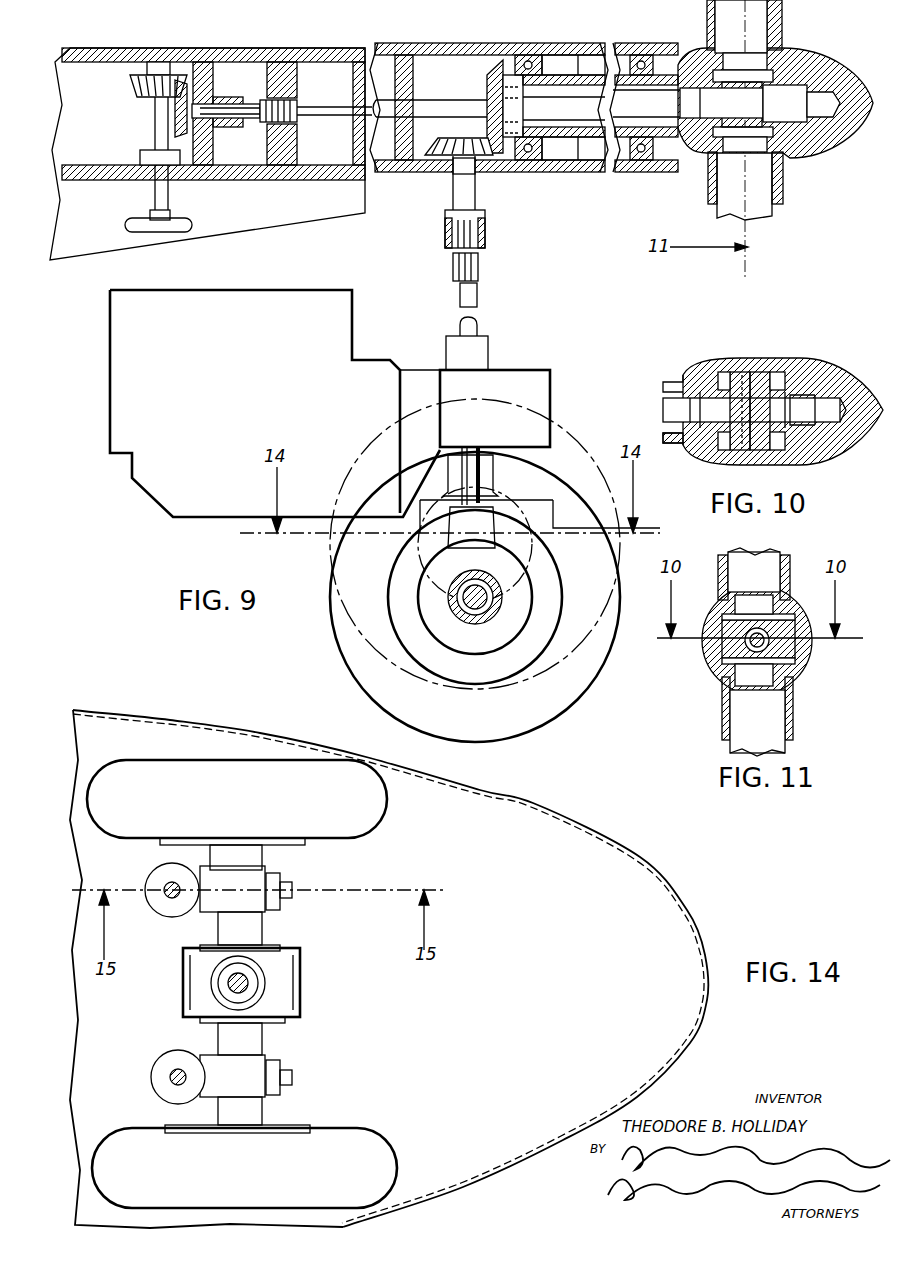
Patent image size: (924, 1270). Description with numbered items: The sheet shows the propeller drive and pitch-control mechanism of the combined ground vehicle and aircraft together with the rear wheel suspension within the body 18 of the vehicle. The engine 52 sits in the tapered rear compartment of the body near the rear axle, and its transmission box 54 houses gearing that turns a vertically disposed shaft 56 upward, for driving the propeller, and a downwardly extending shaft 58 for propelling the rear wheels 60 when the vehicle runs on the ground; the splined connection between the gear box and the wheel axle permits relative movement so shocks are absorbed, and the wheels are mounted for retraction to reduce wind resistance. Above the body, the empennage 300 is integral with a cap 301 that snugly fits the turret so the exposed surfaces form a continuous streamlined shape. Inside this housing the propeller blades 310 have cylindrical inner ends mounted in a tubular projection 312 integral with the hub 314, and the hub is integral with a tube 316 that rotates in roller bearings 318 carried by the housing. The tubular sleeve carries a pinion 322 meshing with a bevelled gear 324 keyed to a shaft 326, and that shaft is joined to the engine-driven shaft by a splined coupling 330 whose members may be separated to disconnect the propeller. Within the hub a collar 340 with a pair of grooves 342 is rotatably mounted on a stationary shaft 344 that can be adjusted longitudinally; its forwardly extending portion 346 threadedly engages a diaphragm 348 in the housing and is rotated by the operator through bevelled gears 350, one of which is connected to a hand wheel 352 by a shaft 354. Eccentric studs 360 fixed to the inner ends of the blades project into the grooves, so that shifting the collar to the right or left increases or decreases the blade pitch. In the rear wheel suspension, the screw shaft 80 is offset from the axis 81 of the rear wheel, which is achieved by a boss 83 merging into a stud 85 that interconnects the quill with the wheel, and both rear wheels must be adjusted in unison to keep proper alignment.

In FIG. 14, the hull 18 is at (535, 808).
In FIG. 9, the engine 52 is at (352, 310).
In FIG. 9, the transmission box 54 is at (512, 375).
In FIG. 9, the vertically disposed shaft 56 is at (460, 300).
In FIG. 9, the downwardly extending shaft 58 is at (484, 478).
In FIG. 14, the downwardly extending shaft 58 is at (228, 983).
In FIG. 9, the rear wheels 60 is at (605, 640).
In FIG. 14, the rear wheels 60 is at (380, 796).
In FIG. 14, the screw shaft 80 is at (160, 882).
In FIG. 9, the axis of the rear wheel 81 is at (486, 598).
In FIG. 14, the boss 83 is at (200, 912).
In FIG. 14, the stud 85 is at (292, 890).
In FIG. 9, the empennage 300 is at (432, 46).
In FIG. 9, the cap 301 is at (300, 210).
In FIG. 9, the propeller blades 310 is at (775, 208).
In FIG. 11, the propeller blades 310 is at (755, 560).
In FIG. 9, the tubular projection 312 is at (782, 22).
In FIG. 11, the tubular projection 312 is at (718, 565).
In FIG. 9, the hub 314 is at (805, 63).
In FIG. 10, the hub 314 is at (860, 395).
In FIG. 11, the hub 314 is at (810, 655).
In FIG. 9, the tube 316 is at (583, 80).
In FIG. 9, the roller bearings 318 is at (528, 56).
In FIG. 9, the pinion 322 is at (488, 80).
In FIG. 9, the bevelled gear 324 is at (470, 138).
In FIG. 9, the shaft 326 is at (476, 200).
In FIG. 9, the splined coupling 330 is at (480, 262).
In FIG. 9, the collar 340 is at (710, 60).
In FIG. 10, the collar 340 is at (760, 372).
In FIG. 10, the grooves 342 is at (742, 372).
In FIG. 11, the grooves 342 is at (756, 642).
In FIG. 9, the stationary shaft 344 is at (800, 115).
In FIG. 10, the stationary shaft 344 is at (757, 386).
In FIG. 9, the forwardly extending portion 346 is at (313, 107).
In FIG. 9, the diaphragm 348 is at (288, 67).
In FIG. 9, the bevelled gears 350 is at (155, 112).
In FIG. 9, the hand wheel 352 is at (192, 222).
In FIG. 9, the shaft 354 is at (170, 190).
In FIG. 9, the eccentric studs 360 is at (742, 130).
In FIG. 10, the eccentric studs 360 is at (745, 450).
In FIG. 11, the eccentric studs 360 is at (725, 616).